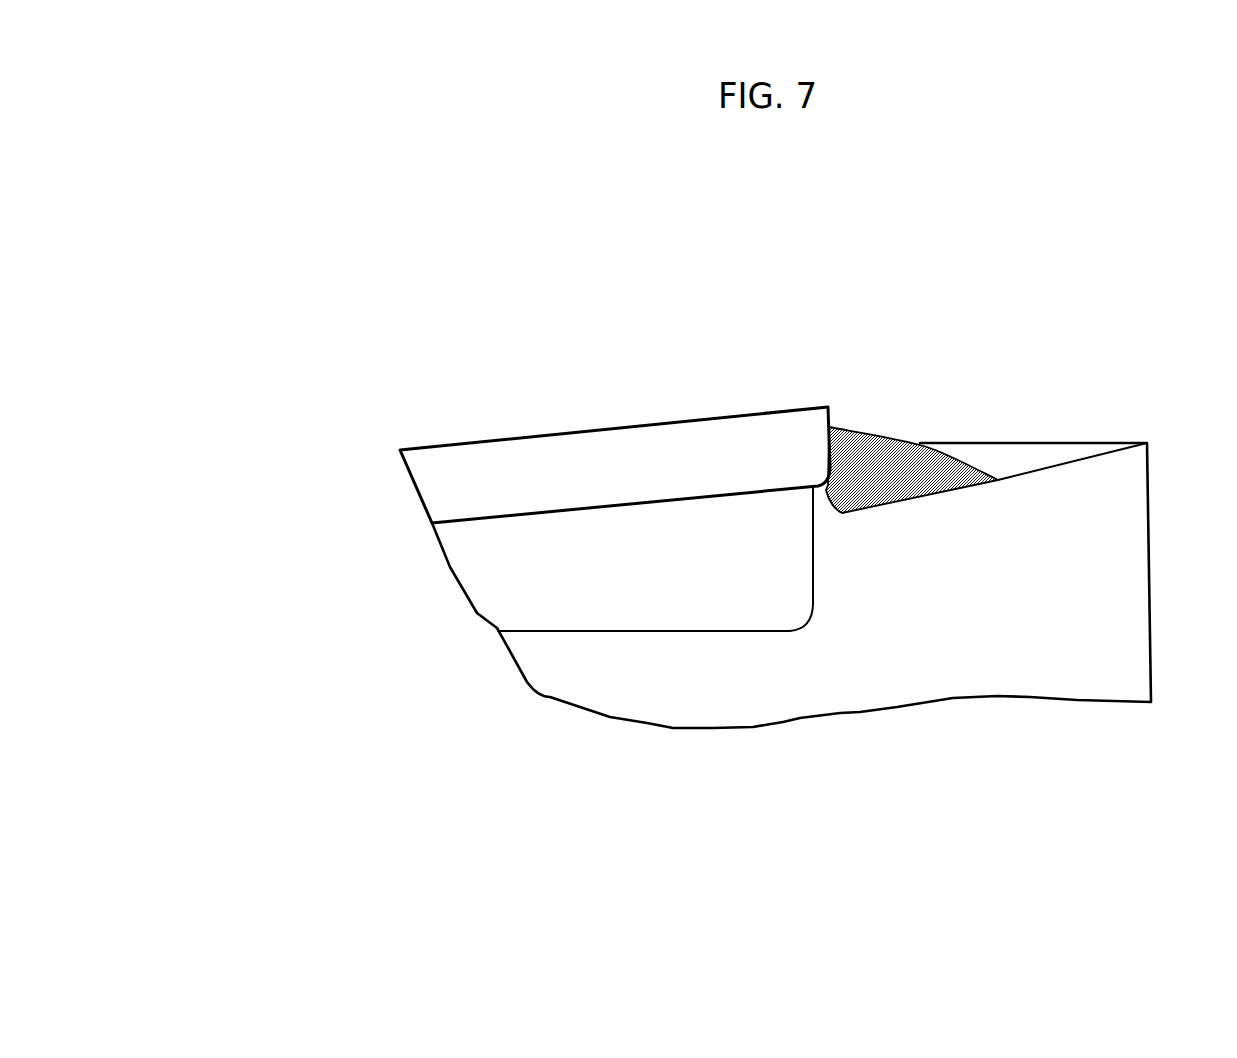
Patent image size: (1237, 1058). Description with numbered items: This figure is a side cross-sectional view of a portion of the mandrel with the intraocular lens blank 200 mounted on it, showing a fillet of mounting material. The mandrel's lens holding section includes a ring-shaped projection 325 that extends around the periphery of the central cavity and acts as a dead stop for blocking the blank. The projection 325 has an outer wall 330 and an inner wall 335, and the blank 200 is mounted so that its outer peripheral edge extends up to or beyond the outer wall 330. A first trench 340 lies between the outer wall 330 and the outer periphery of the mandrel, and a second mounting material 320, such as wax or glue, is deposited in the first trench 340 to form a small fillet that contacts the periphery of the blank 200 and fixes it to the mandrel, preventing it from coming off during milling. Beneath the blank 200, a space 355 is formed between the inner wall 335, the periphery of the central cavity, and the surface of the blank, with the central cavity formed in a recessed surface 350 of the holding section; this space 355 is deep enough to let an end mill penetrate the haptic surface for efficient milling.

The intraocular lens blank 200 is at (512, 450).
The second mounting material 320 is at (847, 448).
The projection 325 is at (820, 500).
The outer wall 330 is at (830, 490).
The inner wall 335 is at (811, 504).
The first trench 340 is at (1030, 460).
The recessed surface 350 is at (560, 630).
The space 355 is at (493, 563).